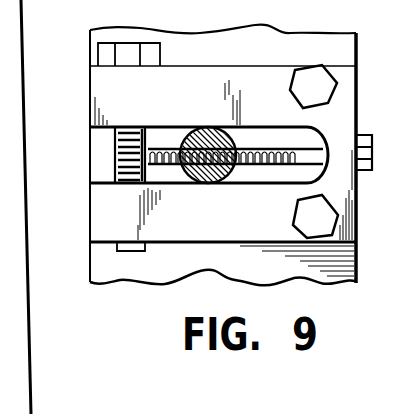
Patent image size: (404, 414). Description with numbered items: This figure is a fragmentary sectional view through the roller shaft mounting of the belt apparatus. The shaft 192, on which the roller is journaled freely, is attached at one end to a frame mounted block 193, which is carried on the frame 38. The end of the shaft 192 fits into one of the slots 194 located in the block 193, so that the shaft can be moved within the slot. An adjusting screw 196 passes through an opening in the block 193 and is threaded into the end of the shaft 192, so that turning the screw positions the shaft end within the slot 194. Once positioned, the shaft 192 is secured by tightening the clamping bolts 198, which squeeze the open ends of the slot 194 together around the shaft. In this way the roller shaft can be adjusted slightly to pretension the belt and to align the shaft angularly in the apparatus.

The frame 38 is at (163, 268).
The shaft 192 is at (208, 183).
The frame mounted block 193 is at (340, 105).
The slots 194 is at (267, 137).
The adjusting screws 196 is at (372, 170).
The clamping bolts 198 is at (130, 53).